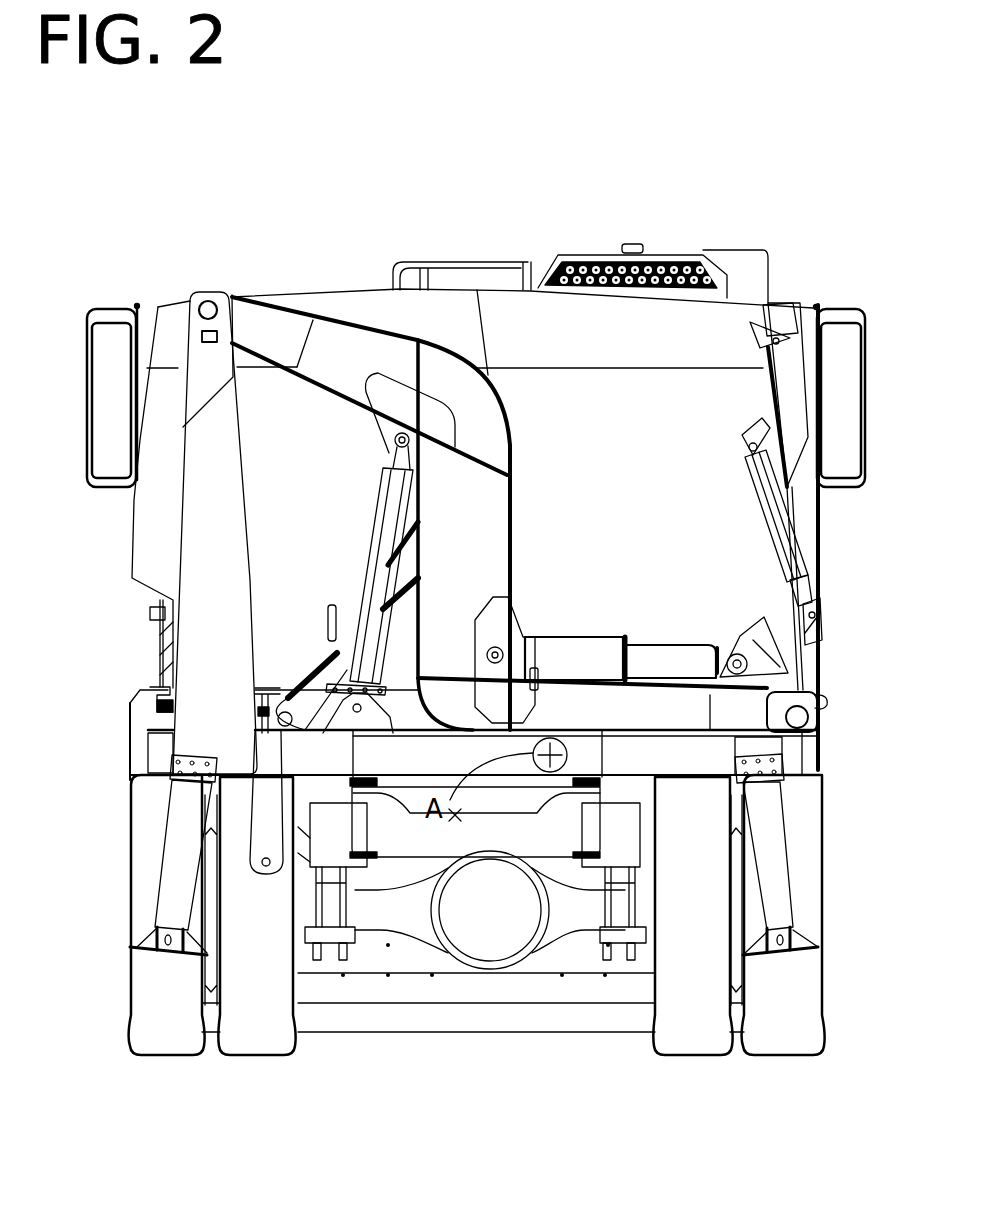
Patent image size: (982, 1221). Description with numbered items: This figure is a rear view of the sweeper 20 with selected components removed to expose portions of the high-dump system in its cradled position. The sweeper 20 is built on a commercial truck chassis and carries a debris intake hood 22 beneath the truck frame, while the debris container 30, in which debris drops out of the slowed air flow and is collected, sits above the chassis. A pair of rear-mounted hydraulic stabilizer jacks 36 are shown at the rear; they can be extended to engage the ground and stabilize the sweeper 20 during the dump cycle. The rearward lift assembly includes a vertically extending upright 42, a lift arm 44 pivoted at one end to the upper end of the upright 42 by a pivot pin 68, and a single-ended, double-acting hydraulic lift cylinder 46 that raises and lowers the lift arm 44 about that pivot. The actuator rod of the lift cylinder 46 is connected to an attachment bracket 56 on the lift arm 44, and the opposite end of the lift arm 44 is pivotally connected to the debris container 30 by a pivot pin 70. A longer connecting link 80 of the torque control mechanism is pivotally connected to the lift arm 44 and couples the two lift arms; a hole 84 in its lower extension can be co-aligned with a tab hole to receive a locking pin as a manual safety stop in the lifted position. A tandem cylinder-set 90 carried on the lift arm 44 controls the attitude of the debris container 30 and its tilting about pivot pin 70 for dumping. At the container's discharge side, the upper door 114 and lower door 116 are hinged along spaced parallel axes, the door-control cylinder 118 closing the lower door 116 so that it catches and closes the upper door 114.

The sweeper 20 is at (637, 102).
The debris intake hood 22 is at (605, 988).
The debris container 30 is at (658, 516).
The rear-mounted hydraulic stabilizer jacks 36 is at (182, 868).
The upright 42 is at (234, 647).
The lift arm 44 is at (520, 502).
The hydraulic lift cylinder 46 is at (364, 525).
The attachment bracket 56 is at (378, 428).
The pivot pin 68 is at (208, 300).
The pivot pin 70 is at (802, 717).
The connecting link 80 is at (327, 668).
The hole 84 is at (265, 866).
The tandem cylinder-set 90 is at (718, 635).
The upper door 114 is at (782, 387).
The lower door 116 is at (799, 514).
The door-control cylinder 118 is at (783, 540).